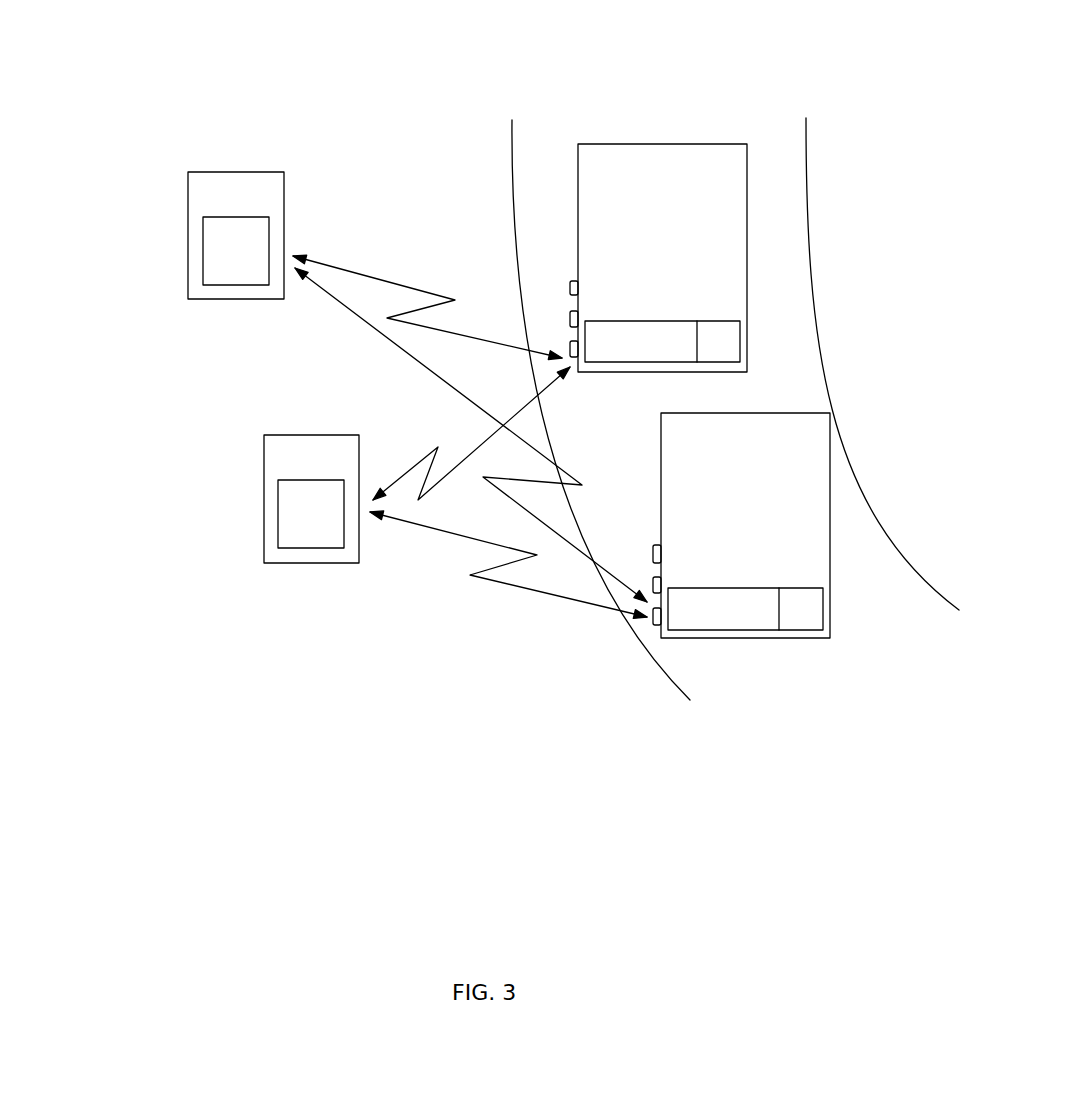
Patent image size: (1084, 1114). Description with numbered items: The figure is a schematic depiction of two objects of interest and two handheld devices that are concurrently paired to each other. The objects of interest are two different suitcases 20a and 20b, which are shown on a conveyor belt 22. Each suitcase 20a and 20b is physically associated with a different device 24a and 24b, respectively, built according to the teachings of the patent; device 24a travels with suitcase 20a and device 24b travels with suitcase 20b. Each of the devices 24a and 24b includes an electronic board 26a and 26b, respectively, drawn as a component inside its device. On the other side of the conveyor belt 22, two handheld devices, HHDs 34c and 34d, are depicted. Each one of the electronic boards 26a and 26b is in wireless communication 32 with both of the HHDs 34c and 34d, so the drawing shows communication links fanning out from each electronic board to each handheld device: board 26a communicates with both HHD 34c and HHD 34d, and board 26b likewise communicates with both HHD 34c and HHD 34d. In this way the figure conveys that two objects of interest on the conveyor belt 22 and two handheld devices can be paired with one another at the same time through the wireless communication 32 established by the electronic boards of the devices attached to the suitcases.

The suitcase 20a is at (676, 144).
The suitcase 20b is at (762, 412).
The conveyor belt 22 is at (806, 160).
The device 24a is at (665, 322).
The device 24b is at (748, 588).
The electronic board 26a is at (625, 340).
The electronic board 26b is at (708, 606).
The wireless communication 32 is at (362, 272).
The HHD 34c is at (188, 230).
The HHD 34d is at (264, 503).